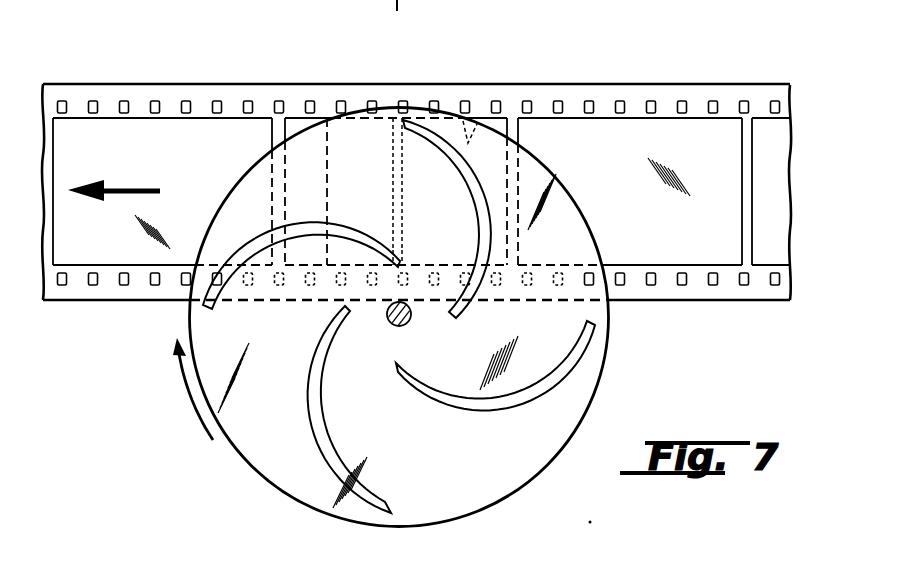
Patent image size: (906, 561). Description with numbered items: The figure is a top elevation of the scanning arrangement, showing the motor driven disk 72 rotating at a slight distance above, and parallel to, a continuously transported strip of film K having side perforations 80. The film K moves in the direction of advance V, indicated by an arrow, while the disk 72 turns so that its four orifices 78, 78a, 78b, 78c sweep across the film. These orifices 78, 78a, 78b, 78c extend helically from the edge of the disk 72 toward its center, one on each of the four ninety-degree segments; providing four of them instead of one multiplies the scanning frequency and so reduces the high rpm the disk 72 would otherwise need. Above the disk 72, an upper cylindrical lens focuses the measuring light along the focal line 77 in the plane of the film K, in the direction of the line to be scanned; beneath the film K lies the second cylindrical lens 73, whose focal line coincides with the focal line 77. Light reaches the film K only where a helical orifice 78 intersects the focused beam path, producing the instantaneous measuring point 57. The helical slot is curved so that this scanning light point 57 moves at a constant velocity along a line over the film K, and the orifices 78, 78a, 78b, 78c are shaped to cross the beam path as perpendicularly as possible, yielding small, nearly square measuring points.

The film K is at (143, 136).
The side perforations 80 is at (219, 99).
The direction of advance V is at (118, 189).
The motor driven disk 72 is at (582, 398).
The second cylindrical lens 73 is at (470, 138).
The focal line 77 is at (393, 196).
The helical orifice 78 is at (255, 247).
The helical orifice 78a is at (480, 226).
The helical orifice 78b is at (495, 404).
The helical orifice 78c is at (336, 458).
The instantaneous measuring point 57 is at (395, 265).